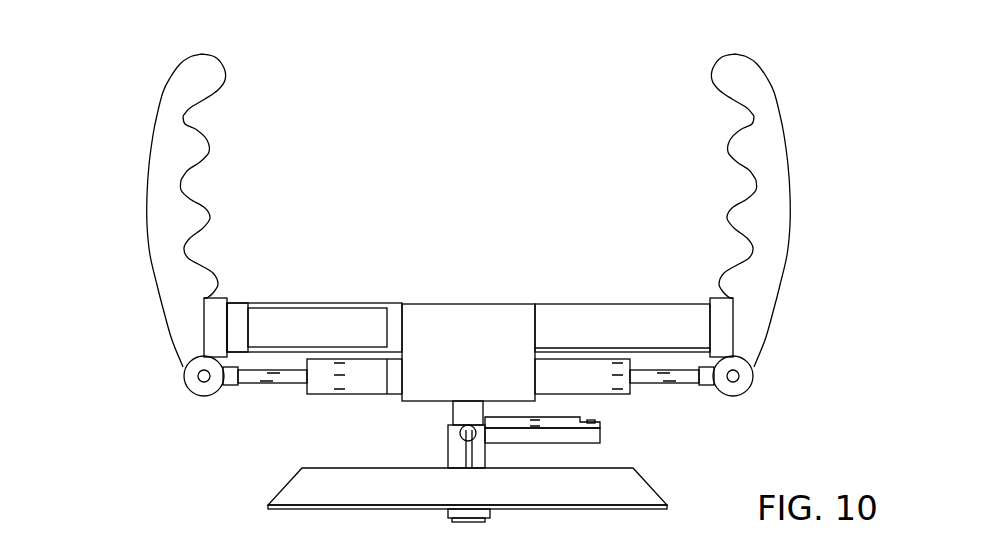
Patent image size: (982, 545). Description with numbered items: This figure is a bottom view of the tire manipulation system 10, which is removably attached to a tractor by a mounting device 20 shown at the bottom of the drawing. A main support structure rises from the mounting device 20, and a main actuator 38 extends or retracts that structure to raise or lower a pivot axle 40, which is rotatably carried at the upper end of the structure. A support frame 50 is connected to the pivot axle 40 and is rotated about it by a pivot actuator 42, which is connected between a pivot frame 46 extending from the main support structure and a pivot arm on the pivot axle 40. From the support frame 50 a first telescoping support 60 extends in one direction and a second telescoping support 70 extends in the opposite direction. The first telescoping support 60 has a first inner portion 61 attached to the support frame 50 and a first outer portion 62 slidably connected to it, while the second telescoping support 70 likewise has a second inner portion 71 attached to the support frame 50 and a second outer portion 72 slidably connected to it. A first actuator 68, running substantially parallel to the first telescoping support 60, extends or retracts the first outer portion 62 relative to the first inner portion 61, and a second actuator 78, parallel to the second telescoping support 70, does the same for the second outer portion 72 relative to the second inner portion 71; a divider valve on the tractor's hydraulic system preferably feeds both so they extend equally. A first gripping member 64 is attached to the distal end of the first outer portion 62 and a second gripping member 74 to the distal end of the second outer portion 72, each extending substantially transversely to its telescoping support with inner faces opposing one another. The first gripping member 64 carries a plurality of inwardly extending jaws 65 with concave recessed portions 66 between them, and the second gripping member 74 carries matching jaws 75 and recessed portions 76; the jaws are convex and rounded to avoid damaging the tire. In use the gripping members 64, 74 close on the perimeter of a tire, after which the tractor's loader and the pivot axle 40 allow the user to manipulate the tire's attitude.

The tire manipulation system 10 is at (130, 91).
The mounting device 20 is at (290, 482).
The main actuator 38 is at (458, 434).
The pivot axle 40 is at (452, 413).
The pivot actuator 42 is at (540, 413).
The pivot frame 46 is at (577, 445).
The support frame 50 is at (463, 342).
The first telescoping support 60 is at (249, 295).
The first inner portion 61 is at (237, 335).
The first outer portion 62 is at (213, 318).
The first gripping member 64 is at (148, 238).
The jaws 65 is at (211, 150).
The recessed portions 66 is at (185, 117).
The first actuator 68 is at (316, 394).
The second telescoping support 70 is at (557, 290).
The second inner portion 71 is at (655, 317).
The second outer portion 72 is at (720, 318).
The second gripping member 74 is at (790, 223).
The jaws 75 is at (726, 150).
The recessed portions 76 is at (753, 117).
The second actuator 78 is at (572, 375).